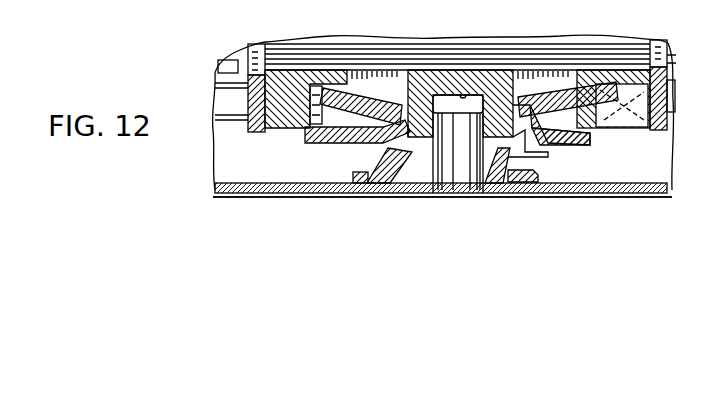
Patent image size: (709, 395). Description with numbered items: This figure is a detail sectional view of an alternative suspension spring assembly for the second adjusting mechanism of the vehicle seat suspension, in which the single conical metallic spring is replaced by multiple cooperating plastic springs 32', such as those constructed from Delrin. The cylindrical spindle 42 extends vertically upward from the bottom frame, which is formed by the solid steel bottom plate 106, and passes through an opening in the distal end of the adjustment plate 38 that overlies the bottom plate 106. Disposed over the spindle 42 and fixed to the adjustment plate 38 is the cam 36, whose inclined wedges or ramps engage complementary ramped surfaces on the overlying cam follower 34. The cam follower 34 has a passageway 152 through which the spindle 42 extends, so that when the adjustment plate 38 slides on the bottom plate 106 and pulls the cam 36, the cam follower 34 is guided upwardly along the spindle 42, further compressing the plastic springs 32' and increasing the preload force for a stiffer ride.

The plastic springs 32' is at (479, 115).
The passageway 152 is at (462, 93).
The cam follower 34 is at (498, 88).
The adjustment plate 38 is at (277, 183).
The bottom plate 106 is at (271, 199).
The cylindrical spindle 42 is at (455, 177).
The cam 36 is at (492, 188).